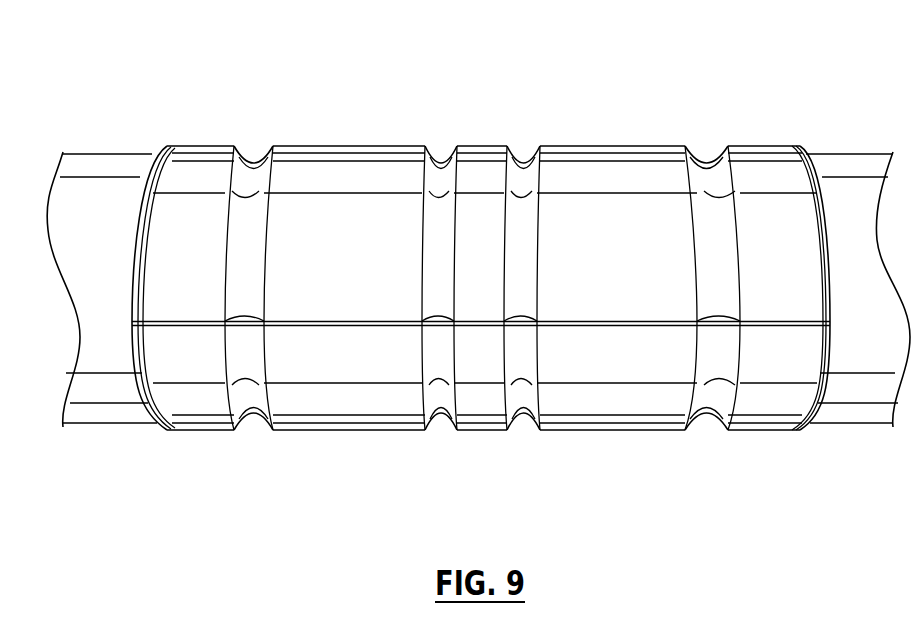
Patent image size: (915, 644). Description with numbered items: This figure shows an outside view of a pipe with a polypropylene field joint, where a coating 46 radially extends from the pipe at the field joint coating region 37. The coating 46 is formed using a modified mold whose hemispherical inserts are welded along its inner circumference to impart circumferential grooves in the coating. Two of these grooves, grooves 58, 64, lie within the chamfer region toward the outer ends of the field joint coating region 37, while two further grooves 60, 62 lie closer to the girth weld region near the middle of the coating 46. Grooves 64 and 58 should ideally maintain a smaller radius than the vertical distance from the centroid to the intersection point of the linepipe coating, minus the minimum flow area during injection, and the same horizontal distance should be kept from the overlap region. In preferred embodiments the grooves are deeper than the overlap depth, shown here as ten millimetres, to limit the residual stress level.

The field joint coating region 37 is at (481, 268).
The coating 46 is at (347, 222).
The groove 58 is at (705, 165).
The groove 60 is at (522, 165).
The groove 62 is at (442, 165).
The groove 64 is at (253, 172).